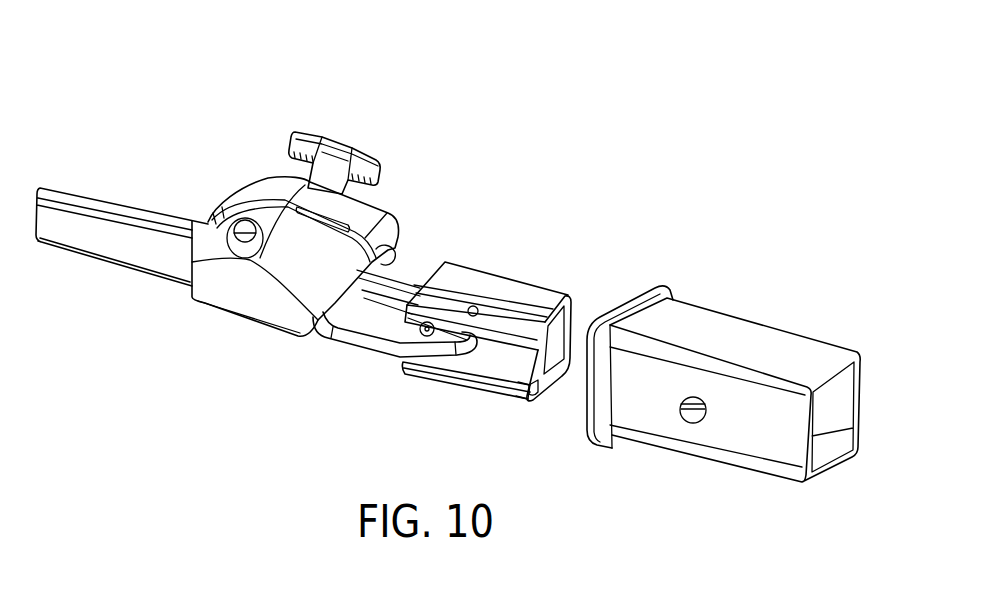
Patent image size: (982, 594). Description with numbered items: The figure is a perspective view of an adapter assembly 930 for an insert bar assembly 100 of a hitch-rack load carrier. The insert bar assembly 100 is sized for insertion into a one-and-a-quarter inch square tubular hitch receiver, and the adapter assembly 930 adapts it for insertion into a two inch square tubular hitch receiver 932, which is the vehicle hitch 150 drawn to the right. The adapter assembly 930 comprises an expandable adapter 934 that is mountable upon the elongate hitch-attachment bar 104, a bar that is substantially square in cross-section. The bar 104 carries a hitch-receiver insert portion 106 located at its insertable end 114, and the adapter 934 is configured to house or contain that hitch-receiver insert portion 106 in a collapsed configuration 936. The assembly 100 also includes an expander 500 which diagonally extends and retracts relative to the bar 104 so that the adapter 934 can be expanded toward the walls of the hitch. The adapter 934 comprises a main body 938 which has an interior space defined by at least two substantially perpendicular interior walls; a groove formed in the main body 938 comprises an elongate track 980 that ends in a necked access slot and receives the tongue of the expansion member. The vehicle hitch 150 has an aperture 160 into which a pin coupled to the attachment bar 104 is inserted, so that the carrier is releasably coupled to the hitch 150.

The insert bar assembly 100 is at (607, 143).
The elongate hitch-attachment bar 104 is at (152, 225).
The hitch-receiver insert portion 106 is at (451, 391).
The insertable end 114 is at (540, 335).
The vehicle hitch 150 is at (723, 366).
The aperture 160 is at (681, 423).
The expander 500 is at (566, 309).
The adapter assembly 930 is at (484, 328).
The square tubular hitch receiver 932 is at (650, 285).
The expandable adapter 934 is at (473, 277).
The collapsed configuration 936 is at (238, 60).
The main body 938 is at (413, 320).
The elongate track 980 is at (568, 332).